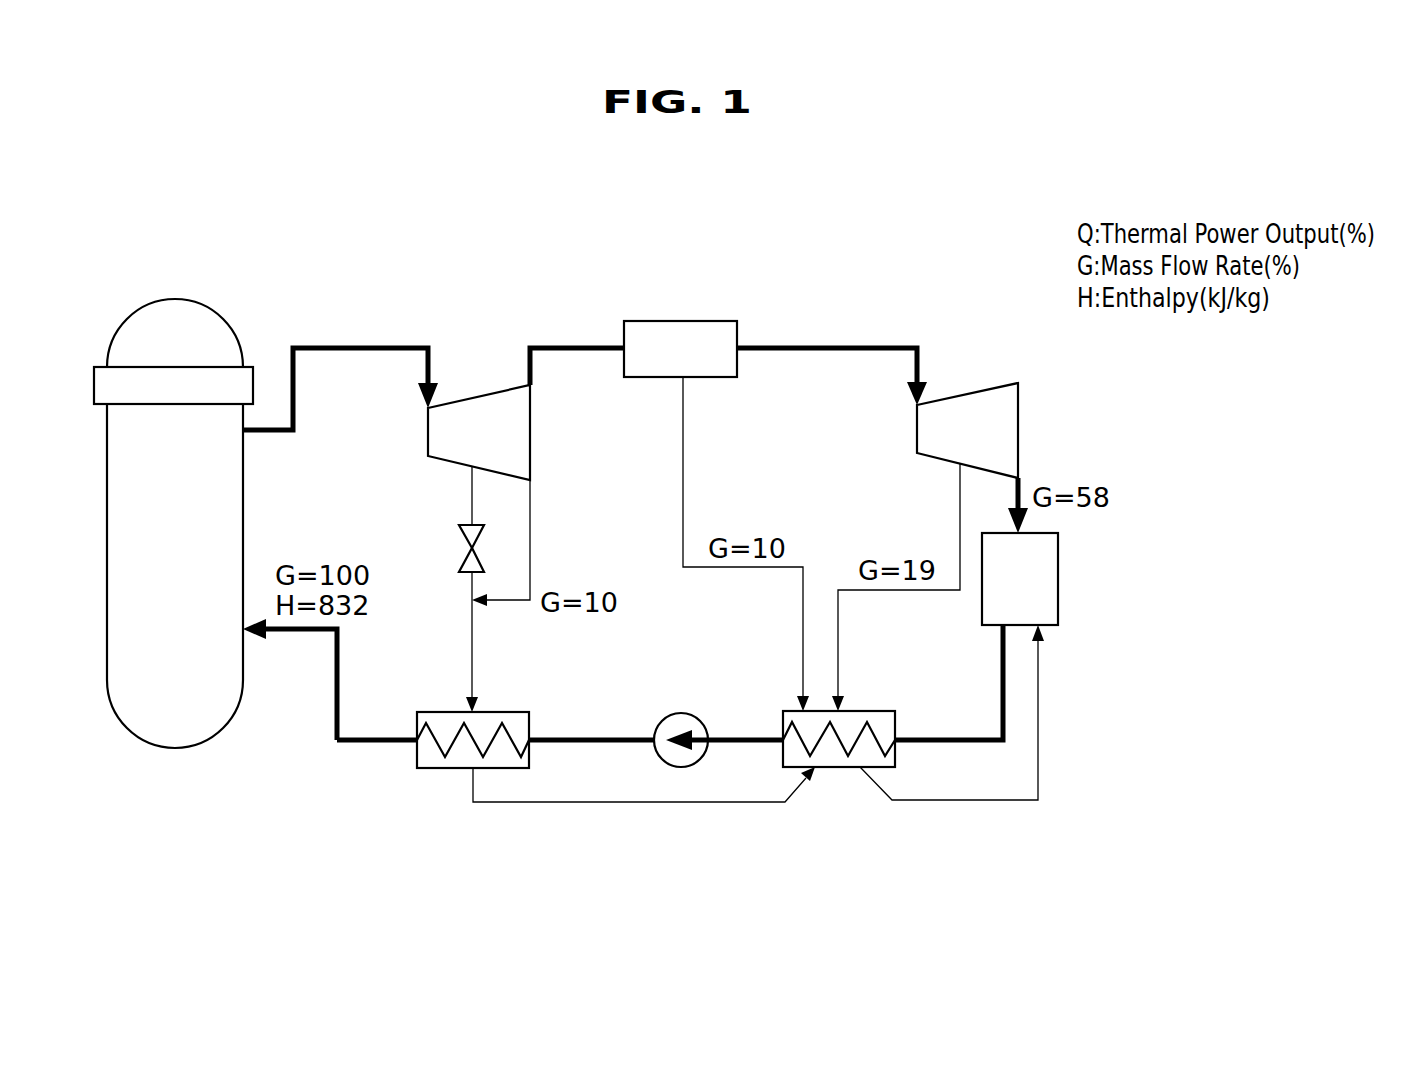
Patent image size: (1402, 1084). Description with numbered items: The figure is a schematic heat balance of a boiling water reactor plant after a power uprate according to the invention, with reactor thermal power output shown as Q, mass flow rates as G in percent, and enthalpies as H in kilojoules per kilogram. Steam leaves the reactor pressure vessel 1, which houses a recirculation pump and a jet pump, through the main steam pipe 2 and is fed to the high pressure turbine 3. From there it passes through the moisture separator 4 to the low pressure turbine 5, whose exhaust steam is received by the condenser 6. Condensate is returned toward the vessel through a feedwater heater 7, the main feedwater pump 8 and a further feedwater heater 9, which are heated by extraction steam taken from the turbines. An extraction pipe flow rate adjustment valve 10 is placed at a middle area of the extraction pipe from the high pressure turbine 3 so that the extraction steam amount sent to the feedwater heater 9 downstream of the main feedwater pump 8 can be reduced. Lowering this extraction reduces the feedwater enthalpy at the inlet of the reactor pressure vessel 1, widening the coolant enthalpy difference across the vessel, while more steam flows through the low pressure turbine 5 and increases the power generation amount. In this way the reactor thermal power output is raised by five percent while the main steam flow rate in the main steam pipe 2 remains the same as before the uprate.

The reactor pressure vessel 1 is at (175, 297).
The main steam pipe 2 is at (296, 401).
The high pressure turbine 3 is at (527, 437).
The moisture separator 4 is at (683, 323).
The low pressure turbine 5 is at (1013, 430).
The condenser 6 is at (1056, 582).
The feedwater heater 7 is at (875, 711).
The main feedwater pump 8 is at (678, 713).
The feedwater heater 9 is at (505, 712).
The extraction pipe flow rate adjustment valve 10 is at (478, 556).